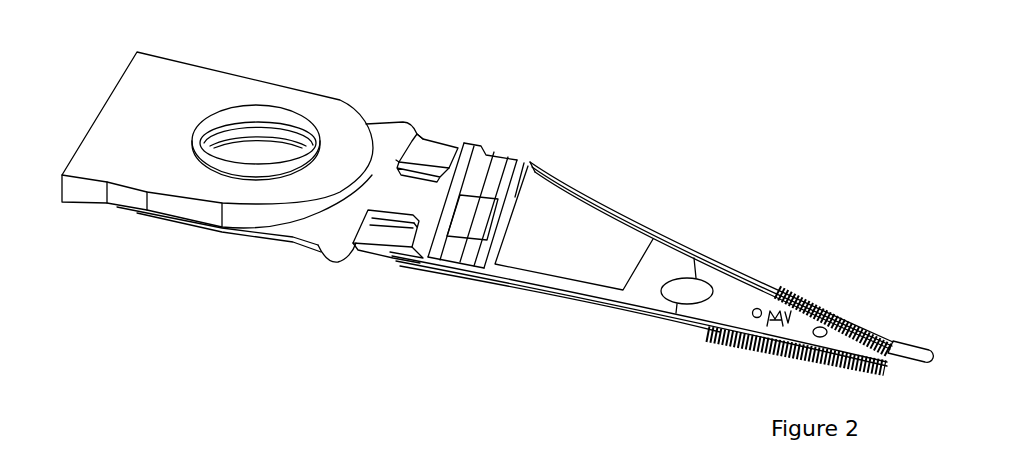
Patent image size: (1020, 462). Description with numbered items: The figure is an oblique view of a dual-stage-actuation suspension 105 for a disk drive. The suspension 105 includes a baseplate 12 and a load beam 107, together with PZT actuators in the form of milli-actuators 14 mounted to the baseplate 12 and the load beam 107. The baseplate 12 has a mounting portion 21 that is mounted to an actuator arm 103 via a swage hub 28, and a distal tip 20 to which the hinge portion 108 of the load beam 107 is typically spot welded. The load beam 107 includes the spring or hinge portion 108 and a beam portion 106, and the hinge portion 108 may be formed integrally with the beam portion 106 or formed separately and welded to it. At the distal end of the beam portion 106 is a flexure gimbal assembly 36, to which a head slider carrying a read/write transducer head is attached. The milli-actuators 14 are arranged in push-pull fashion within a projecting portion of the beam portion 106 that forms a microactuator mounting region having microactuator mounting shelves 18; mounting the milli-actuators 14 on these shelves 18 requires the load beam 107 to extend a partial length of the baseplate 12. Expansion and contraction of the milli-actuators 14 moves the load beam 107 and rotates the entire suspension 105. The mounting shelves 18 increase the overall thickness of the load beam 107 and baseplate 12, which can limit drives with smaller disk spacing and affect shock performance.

The baseplate 12 is at (202, 258).
The milli-actuators 14 is at (436, 147).
The microactuator mounting shelves 18 is at (398, 163).
The distal tip 20 is at (465, 195).
The mounting portion 21 is at (325, 243).
The swage hub 28 is at (263, 120).
The flexure gimbal assembly 36 is at (842, 271).
The actuator arm 103 is at (127, 127).
The suspension 105 is at (776, 172).
The beam portion 106 is at (570, 305).
The load beam 107 is at (653, 189).
The hinge portion 108 is at (522, 159).